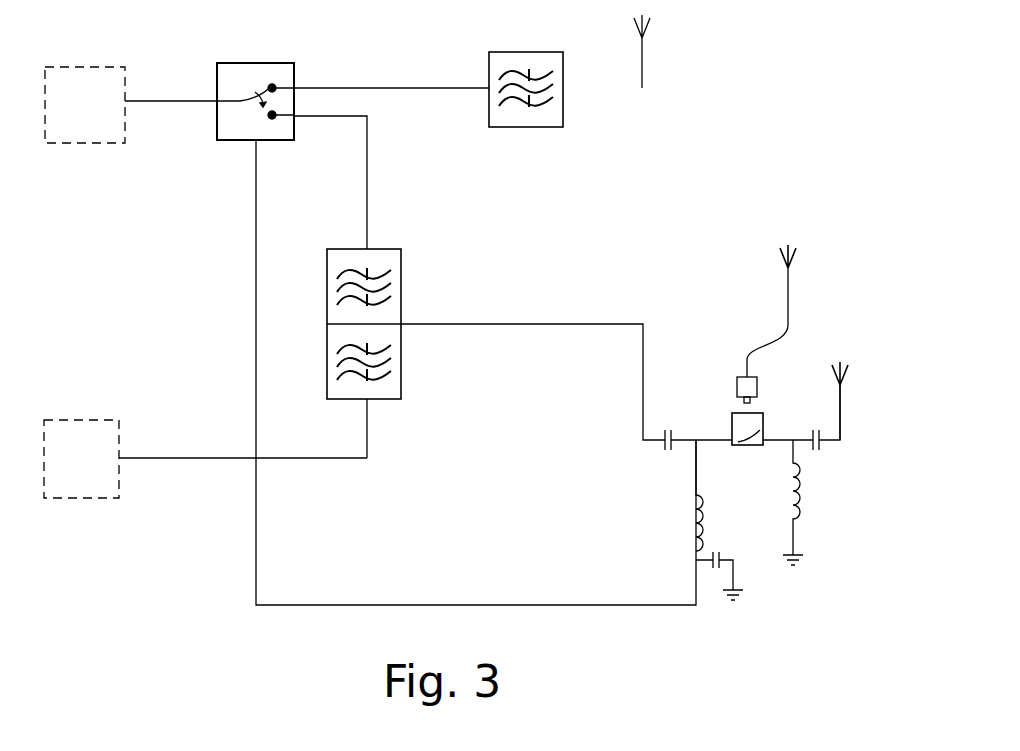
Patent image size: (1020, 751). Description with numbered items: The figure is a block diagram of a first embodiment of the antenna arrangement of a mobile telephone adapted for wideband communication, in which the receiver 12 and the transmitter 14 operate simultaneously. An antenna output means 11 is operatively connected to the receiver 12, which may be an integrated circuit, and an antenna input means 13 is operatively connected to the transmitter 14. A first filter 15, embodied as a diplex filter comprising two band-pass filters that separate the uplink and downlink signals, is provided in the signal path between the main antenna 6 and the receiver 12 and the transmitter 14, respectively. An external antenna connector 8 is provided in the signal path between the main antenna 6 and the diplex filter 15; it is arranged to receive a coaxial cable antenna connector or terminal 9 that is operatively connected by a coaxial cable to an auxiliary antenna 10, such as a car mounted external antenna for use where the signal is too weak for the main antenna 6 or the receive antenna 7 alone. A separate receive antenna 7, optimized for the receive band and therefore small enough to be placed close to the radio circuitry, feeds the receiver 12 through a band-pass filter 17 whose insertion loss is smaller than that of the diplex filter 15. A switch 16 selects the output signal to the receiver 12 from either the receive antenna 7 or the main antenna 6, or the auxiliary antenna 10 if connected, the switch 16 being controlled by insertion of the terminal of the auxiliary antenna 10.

The main antenna 6 is at (848, 378).
The receive antenna 7 is at (651, 23).
The external antenna connector 8 is at (732, 424).
The coaxial cable antenna connector 9 is at (757, 387).
The auxiliary antenna 10 is at (796, 252).
The antenna output means 11 is at (197, 101).
The receiver 12 is at (97, 66).
The antenna input means 13 is at (220, 458).
The transmitter 14 is at (102, 420).
The diplex filter 15 is at (327, 324).
The switch 16 is at (263, 63).
The band-pass filter 17 is at (537, 52).